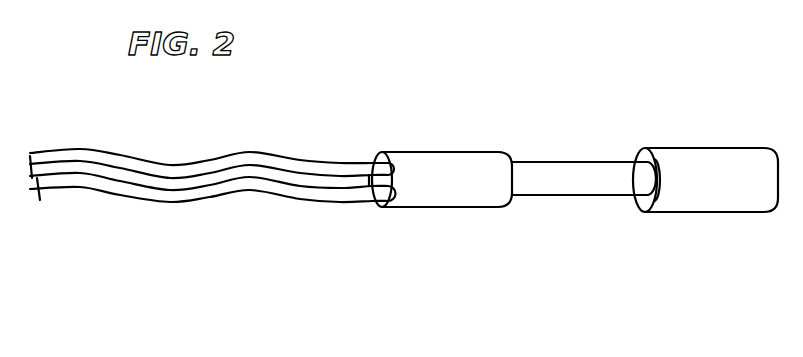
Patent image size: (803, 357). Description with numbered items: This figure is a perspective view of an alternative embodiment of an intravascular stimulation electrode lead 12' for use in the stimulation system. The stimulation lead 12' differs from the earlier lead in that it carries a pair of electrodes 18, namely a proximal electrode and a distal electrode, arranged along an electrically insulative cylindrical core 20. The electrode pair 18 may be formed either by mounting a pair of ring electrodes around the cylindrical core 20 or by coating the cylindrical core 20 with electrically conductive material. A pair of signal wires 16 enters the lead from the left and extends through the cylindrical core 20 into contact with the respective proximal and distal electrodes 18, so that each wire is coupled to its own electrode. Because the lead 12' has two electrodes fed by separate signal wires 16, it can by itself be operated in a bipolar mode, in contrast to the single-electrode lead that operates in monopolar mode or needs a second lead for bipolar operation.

The stimulation electrode lead 12' is at (213, 130).
The signal wires 16 is at (215, 163).
The electrodes 18 is at (668, 222).
The cylindrical core 20 is at (535, 160).